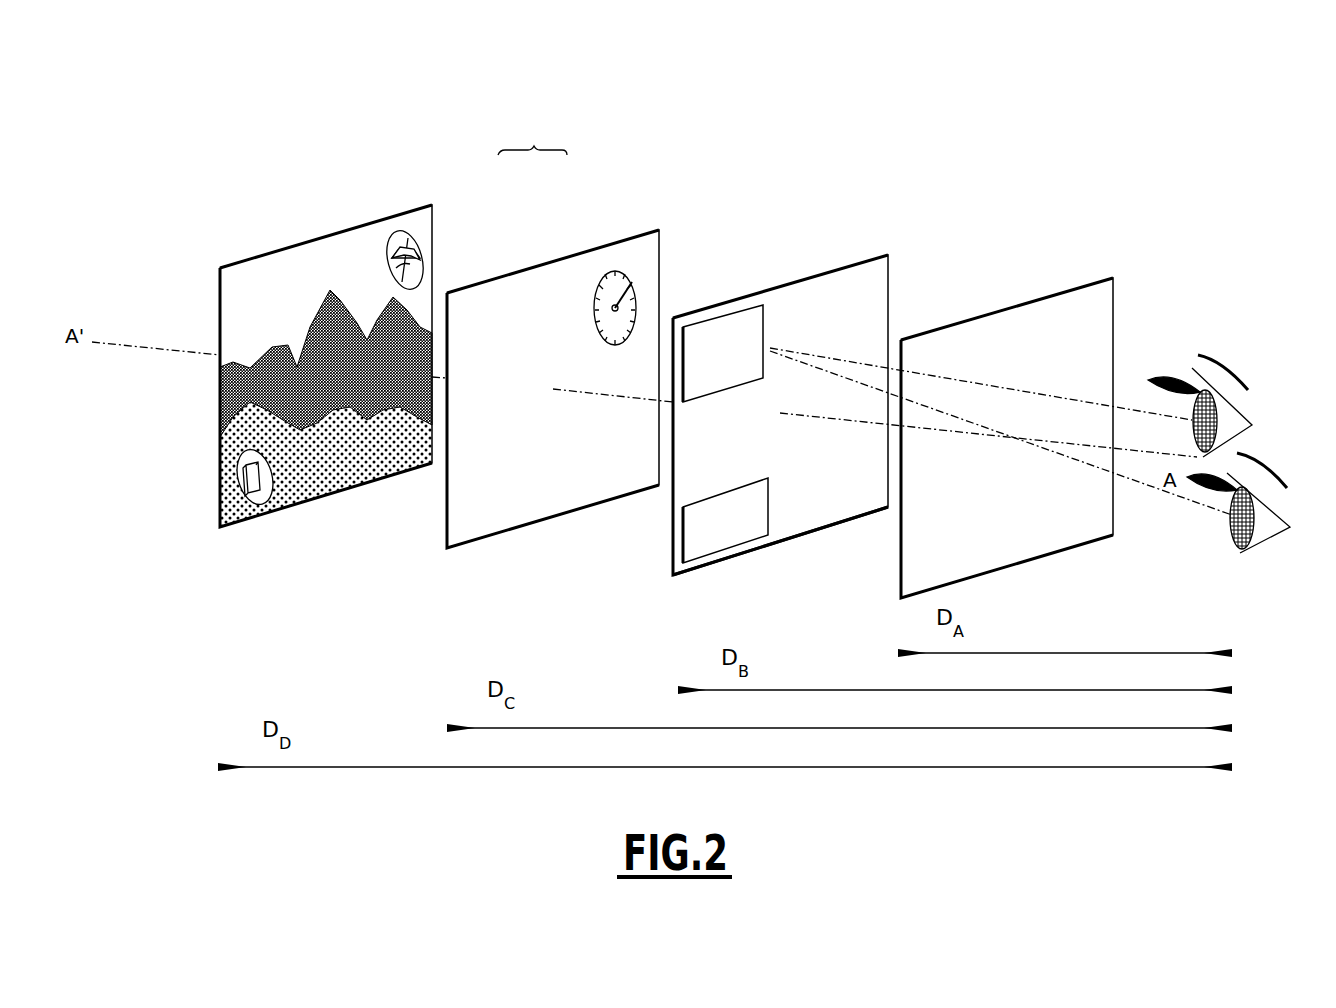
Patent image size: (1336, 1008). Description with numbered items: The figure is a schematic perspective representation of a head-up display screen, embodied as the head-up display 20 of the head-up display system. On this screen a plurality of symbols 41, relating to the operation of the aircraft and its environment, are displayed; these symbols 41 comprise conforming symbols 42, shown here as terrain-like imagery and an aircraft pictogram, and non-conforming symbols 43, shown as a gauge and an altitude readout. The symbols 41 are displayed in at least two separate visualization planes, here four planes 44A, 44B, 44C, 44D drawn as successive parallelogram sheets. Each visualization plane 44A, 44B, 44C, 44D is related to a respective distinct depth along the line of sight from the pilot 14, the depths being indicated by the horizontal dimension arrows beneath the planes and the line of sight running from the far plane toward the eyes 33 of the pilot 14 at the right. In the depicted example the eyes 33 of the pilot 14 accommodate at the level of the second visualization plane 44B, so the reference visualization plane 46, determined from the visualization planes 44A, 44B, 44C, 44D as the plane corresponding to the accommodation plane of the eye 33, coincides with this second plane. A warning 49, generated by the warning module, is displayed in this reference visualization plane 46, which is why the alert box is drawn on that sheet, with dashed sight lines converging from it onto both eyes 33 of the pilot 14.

The head-up display 20 is at (790, 138).
The symbols 41 is at (532, 133).
The conforming symbols 42 is at (432, 250).
The non-conforming symbols 43 is at (607, 275).
The first visualization plane 44A is at (1110, 278).
The second visualization plane 44B is at (872, 253).
The third visualization plane 44C is at (645, 228).
The fourth visualization plane 44D is at (415, 203).
The reference visualization plane 46 is at (805, 533).
The warning 49 is at (748, 310).
The eyes of the pilot 33 is at (1250, 478).
The pilot 14 is at (1290, 548).